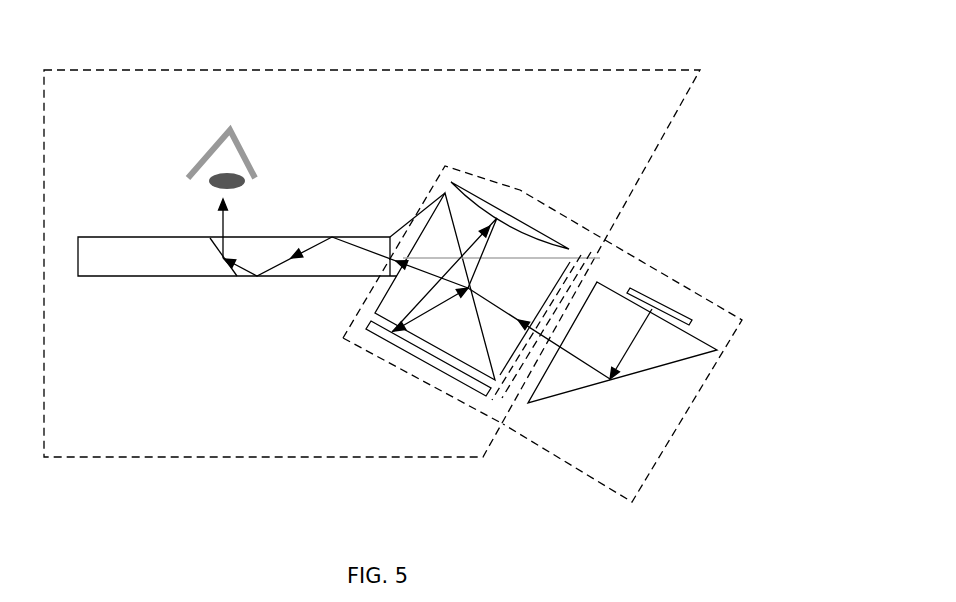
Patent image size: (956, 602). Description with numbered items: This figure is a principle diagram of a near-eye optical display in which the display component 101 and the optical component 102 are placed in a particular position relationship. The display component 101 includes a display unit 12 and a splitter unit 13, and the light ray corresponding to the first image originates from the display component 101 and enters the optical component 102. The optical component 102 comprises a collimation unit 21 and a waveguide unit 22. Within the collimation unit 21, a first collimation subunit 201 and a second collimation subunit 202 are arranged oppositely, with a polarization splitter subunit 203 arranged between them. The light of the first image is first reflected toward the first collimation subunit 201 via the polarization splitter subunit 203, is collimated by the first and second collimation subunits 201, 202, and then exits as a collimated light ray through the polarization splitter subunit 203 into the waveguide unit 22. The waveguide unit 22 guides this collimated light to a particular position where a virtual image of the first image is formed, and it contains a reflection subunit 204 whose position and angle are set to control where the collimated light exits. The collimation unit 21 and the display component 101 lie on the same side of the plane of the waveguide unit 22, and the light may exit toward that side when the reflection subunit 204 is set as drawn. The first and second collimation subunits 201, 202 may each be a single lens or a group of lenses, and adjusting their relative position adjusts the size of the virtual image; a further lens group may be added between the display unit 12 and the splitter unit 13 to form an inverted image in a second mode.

The optical component 102 is at (455, 69).
The display component 101 is at (526, 449).
The collimation unit 21 is at (448, 164).
The first collimation subunit 201 is at (553, 173).
The second collimation subunit 202 is at (405, 348).
The polarization splitter subunit 203 is at (658, 207).
The waveguide unit 22 is at (122, 209).
The reflection subunit 204 is at (217, 247).
The display unit 12 is at (684, 318).
The splitter unit 13 is at (598, 415).